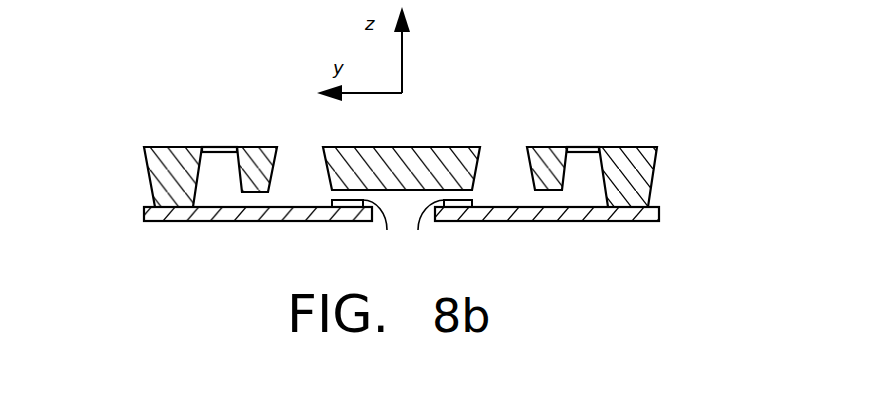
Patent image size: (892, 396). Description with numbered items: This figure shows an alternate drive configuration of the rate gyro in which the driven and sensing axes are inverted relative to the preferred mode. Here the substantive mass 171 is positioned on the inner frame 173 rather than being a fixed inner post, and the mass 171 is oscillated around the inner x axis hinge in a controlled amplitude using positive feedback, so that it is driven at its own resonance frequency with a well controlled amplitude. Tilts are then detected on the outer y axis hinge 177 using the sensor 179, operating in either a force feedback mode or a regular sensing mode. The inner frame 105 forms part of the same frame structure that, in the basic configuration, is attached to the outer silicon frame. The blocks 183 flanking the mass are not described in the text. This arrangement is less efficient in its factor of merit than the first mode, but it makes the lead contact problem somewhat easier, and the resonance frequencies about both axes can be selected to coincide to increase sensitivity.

The inner frame 105 is at (401, 229).
The substantive mass 171 is at (410, 147).
The inner frame 173 is at (540, 146).
The outer y axis hinge 177 is at (217, 147).
The sensor 179 is at (581, 146).
The support block 183 is at (158, 173).